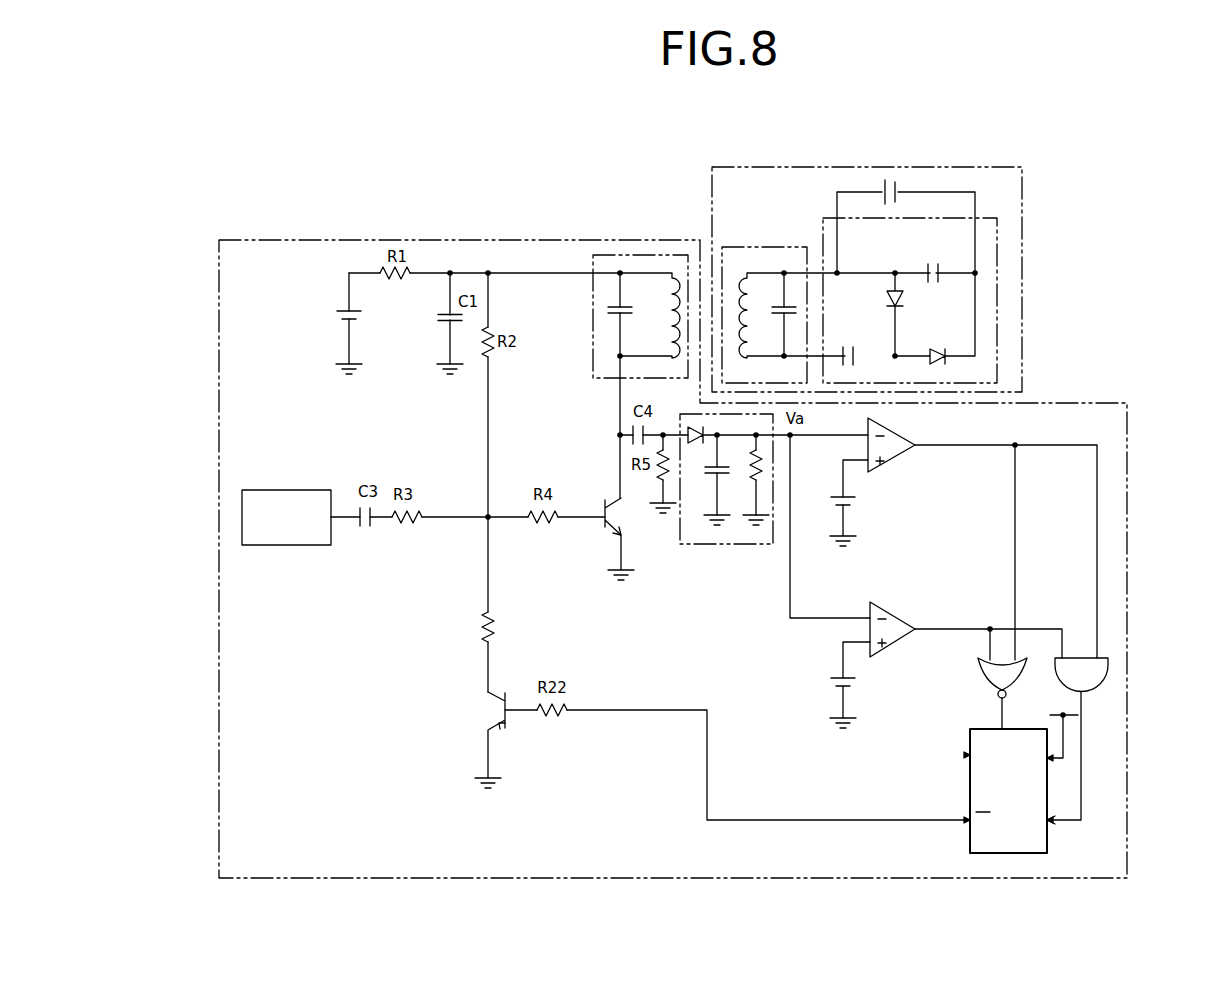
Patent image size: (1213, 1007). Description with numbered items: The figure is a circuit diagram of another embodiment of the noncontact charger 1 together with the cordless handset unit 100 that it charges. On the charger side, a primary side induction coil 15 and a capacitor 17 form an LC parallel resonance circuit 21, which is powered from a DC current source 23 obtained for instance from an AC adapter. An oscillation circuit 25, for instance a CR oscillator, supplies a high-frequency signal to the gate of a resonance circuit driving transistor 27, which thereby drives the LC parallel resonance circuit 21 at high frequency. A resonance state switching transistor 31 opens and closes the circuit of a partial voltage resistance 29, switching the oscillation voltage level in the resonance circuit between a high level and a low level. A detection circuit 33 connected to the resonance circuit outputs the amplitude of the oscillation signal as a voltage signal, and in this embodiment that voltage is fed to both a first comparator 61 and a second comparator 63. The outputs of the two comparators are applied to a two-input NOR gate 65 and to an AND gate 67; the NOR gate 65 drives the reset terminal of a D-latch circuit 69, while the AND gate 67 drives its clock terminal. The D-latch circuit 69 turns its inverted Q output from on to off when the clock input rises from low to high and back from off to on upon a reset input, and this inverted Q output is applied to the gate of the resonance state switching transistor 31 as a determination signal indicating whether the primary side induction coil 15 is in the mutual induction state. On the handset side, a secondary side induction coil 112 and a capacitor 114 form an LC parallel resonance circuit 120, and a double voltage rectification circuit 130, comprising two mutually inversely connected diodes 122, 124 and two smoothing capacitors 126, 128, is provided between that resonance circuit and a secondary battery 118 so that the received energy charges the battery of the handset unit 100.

The noncontact charger 1 is at (1120, 396).
The primary side induction coil 15 is at (666, 292).
The capacitor 17 is at (608, 309).
The LC parallel resonance circuit 21 is at (617, 282).
The DC current source 23 is at (357, 316).
The oscillation circuit 25 is at (289, 538).
The resonance circuit driving transistor 27 is at (612, 506).
The partial voltage resistance 29 is at (497, 622).
The resonance state switching transistor 31 is at (492, 712).
The detection circuit 33 is at (710, 547).
The first comparator 61 is at (903, 627).
The second comparator 63 is at (903, 450).
The NOR gate 65 is at (983, 676).
The AND gate 67 is at (1100, 674).
The D-latch circuit 69 is at (1047, 792).
The handset unit 100 is at (1006, 170).
The secondary side induction coil 112 is at (745, 292).
The capacitor 114 is at (790, 300).
The secondary battery 118 is at (897, 186).
The LC parallel resonance circuit 120 is at (778, 260).
The diode 122 is at (903, 303).
The diode 124 is at (942, 347).
The smoothing capacitor 126 is at (848, 347).
The smoothing capacitor 128 is at (935, 265).
The double voltage rectification circuit 130 is at (946, 260).